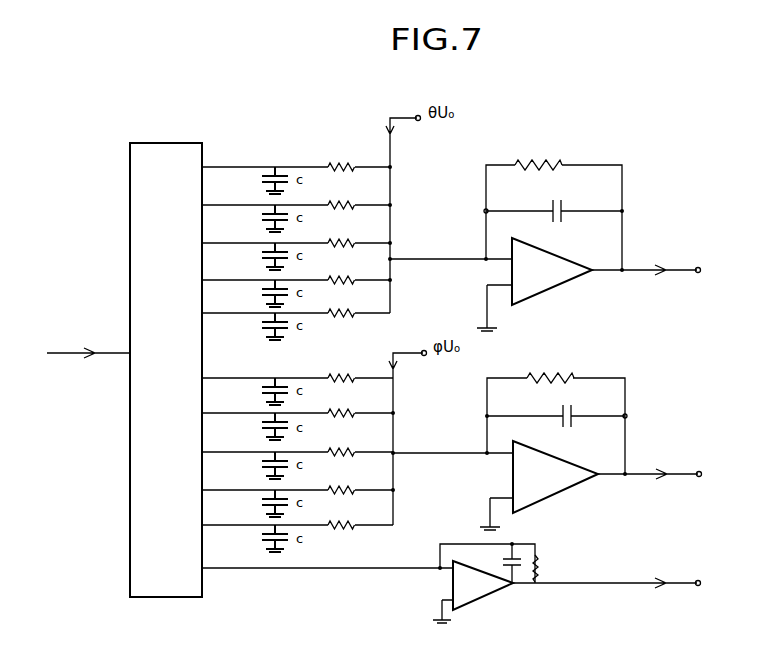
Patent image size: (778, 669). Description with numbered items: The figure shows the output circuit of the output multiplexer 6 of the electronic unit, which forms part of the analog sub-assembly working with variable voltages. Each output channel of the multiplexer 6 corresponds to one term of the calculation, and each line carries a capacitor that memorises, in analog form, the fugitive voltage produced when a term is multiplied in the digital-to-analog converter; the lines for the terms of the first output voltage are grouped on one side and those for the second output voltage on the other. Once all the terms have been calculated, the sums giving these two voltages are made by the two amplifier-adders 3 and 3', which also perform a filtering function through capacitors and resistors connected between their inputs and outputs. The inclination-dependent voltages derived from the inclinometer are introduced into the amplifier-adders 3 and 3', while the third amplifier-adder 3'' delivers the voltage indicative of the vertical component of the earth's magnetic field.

The output multiplexer 6 is at (172, 357).
The amplifier-adder 3 is at (559, 235).
The amplifier-adder 3' is at (561, 442).
The amplifier-adder 3'' is at (581, 582).